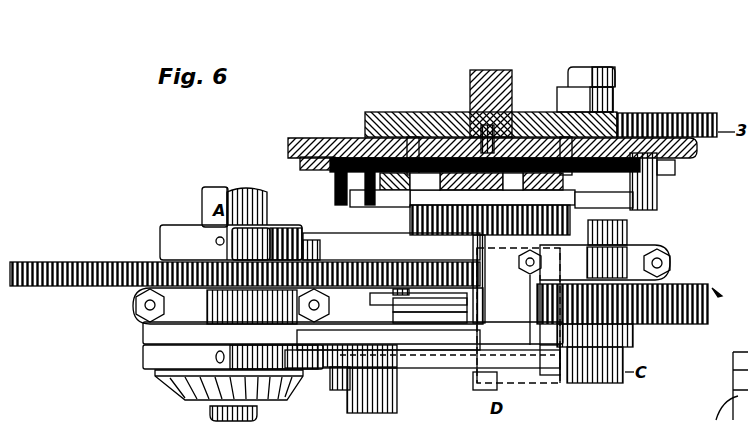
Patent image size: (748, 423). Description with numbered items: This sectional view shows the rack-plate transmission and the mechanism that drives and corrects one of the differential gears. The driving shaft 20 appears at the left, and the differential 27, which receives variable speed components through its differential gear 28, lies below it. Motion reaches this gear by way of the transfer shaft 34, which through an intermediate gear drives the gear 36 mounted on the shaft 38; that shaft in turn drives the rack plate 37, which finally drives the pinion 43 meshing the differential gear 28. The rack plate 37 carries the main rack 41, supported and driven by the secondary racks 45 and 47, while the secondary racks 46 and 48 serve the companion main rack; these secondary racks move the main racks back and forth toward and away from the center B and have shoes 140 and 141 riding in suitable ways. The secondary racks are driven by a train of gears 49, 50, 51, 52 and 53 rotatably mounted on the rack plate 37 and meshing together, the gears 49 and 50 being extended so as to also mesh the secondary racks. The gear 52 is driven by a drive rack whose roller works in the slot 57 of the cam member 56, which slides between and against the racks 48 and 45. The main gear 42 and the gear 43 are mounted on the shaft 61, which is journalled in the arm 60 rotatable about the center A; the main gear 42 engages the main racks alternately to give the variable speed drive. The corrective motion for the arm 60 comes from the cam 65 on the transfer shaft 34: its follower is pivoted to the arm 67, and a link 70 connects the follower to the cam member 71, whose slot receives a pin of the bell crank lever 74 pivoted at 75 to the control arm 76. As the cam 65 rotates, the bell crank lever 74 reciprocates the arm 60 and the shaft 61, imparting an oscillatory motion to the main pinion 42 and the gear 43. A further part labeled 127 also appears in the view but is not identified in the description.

The driving shaft 20 is at (205, 197).
The differential 27 is at (229, 396).
The differential gear 28 is at (45, 262).
The transfer shaft 34 is at (582, 385).
The gear 36 is at (386, 114).
The rack plate 37 is at (698, 151).
The shaft 38 is at (470, 75).
The main rack 41 is at (410, 230).
The main gear 42 is at (484, 235).
The pinion 43 is at (482, 273).
The secondary rack 45 is at (588, 198).
The secondary rack 46 is at (660, 186).
The secondary rack 47 is at (338, 180).
The secondary rack 48 is at (377, 197).
The gear 49 is at (378, 200).
The gear 50 is at (663, 128).
The gear 51 is at (366, 137).
The gear 52 is at (456, 124).
The gear 53 is at (547, 135).
The cam member 56 is at (425, 182).
The slot 57 is at (513, 182).
The arm 60 is at (522, 375).
The shaft 61 is at (482, 391).
The cam 65 is at (694, 325).
The arm 67 is at (545, 370).
The link 70 is at (455, 370).
The cam member 71 is at (345, 380).
The bell crank lever 74 is at (426, 314).
The pivot 75 is at (410, 296).
The control arm 76 is at (342, 352).
The pin 127 is at (716, 294).
The shoe 140 is at (676, 166).
The shoe 141 is at (302, 168).